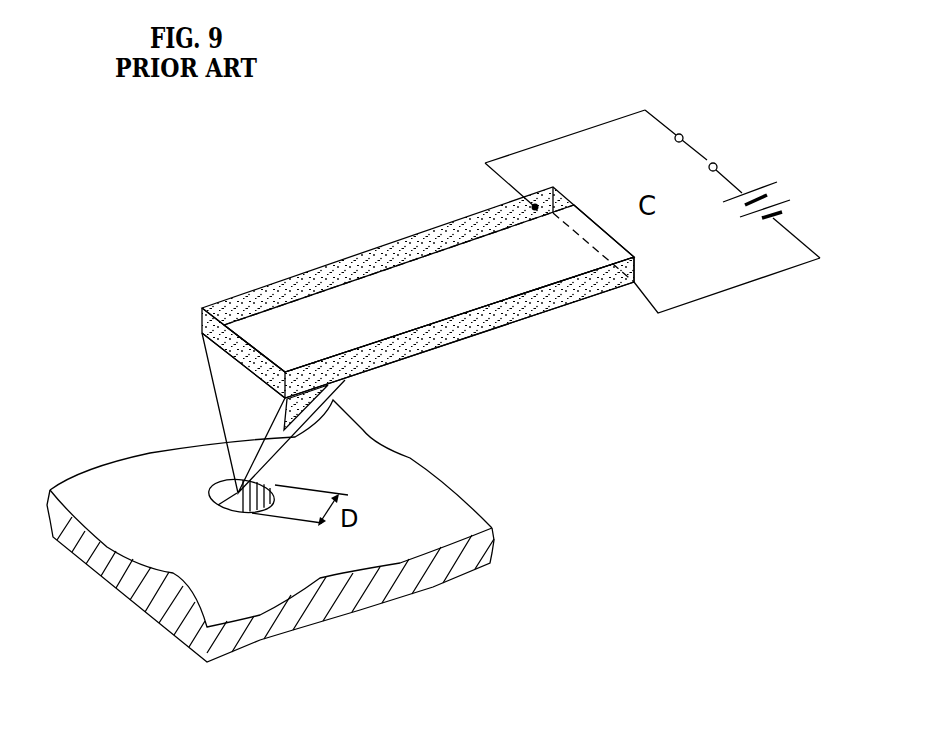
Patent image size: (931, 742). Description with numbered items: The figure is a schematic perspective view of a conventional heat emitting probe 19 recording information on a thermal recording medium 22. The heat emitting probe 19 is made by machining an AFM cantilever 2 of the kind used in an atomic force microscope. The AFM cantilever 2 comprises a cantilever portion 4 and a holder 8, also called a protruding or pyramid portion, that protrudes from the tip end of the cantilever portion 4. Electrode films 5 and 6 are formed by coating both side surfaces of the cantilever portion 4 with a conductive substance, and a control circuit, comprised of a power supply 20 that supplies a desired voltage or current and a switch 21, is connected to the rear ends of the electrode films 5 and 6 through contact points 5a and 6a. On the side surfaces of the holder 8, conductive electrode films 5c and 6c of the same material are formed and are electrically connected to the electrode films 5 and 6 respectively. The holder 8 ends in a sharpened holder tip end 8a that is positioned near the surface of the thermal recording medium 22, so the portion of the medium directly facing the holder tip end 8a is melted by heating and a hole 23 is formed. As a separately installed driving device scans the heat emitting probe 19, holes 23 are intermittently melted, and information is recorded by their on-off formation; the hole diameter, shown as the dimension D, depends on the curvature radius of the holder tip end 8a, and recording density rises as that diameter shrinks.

The heat emitting probe 19 is at (332, 200).
The AFM cantilever 2 is at (360, 248).
The cantilever portion 4 is at (410, 312).
The electrode film 5 is at (525, 308).
The contact point 5a is at (612, 274).
The conductive electrode film 5c is at (330, 400).
The electrode film 6 is at (447, 243).
The contact point 6a is at (535, 207).
The conductive electrode film 6c is at (237, 320).
The holder 8 is at (225, 396).
The holder tip end 8a is at (233, 500).
The power supply 20 is at (787, 202).
The switch 21 is at (694, 146).
The thermal recording medium 22 is at (293, 605).
The hole 23 is at (218, 505).